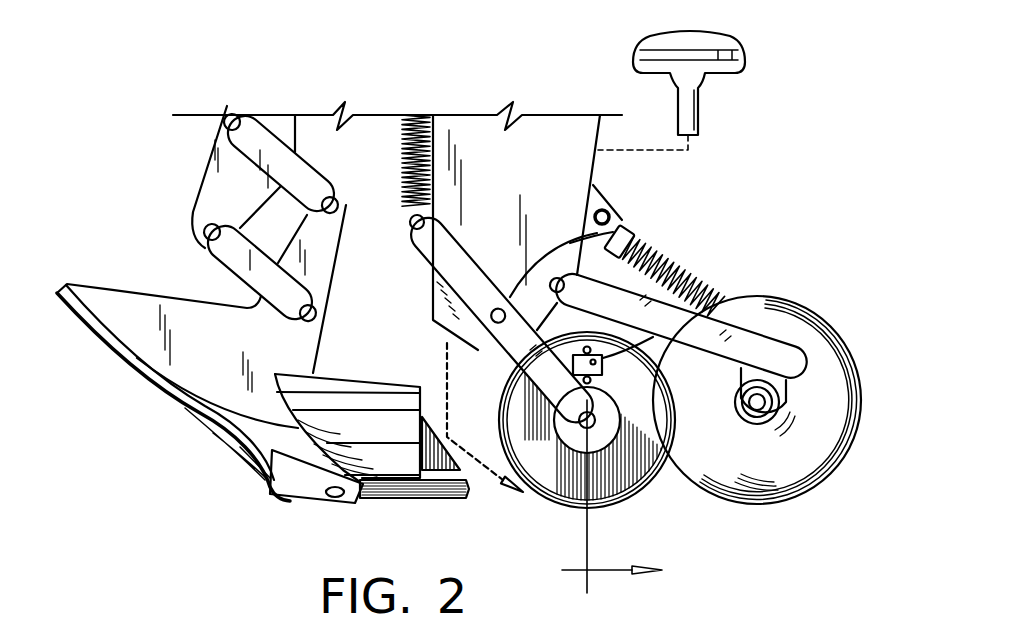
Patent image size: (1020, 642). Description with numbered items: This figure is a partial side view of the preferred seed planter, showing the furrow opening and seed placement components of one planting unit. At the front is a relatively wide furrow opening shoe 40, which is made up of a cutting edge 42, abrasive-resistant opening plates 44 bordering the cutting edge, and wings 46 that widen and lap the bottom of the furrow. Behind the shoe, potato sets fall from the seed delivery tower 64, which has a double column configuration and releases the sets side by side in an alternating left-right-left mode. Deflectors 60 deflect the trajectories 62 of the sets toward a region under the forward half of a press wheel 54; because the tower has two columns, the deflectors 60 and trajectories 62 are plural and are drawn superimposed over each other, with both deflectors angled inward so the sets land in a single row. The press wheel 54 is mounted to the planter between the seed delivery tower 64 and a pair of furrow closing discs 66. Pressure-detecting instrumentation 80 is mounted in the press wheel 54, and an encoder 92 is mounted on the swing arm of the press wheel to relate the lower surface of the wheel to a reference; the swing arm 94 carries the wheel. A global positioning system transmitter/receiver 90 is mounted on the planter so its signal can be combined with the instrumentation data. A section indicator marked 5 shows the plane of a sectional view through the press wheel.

The furrow opening shoe 40 is at (119, 236).
The cutting edge 42 is at (197, 443).
The abrasive-resistant opening plates 44 is at (283, 483).
The wings 46 is at (377, 433).
The press wheel 54 is at (637, 493).
The deflectors 60 is at (457, 463).
The trajectories 62 is at (445, 375).
The seed delivery tower 64 is at (553, 173).
The furrow closing discs 66 is at (833, 330).
The pressure-detecting instrumentation 80 is at (653, 335).
The global positioning system (GPS) transmitter/receiver 90 is at (743, 65).
The encoder 92 is at (622, 232).
The gauge wheel arm 94 is at (455, 263).
The section line 5- 5 is at (626, 496).